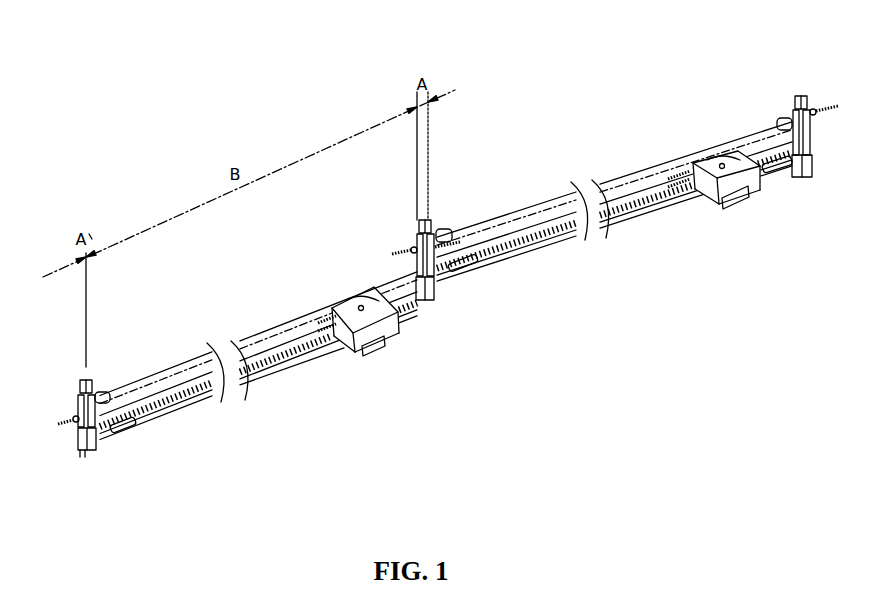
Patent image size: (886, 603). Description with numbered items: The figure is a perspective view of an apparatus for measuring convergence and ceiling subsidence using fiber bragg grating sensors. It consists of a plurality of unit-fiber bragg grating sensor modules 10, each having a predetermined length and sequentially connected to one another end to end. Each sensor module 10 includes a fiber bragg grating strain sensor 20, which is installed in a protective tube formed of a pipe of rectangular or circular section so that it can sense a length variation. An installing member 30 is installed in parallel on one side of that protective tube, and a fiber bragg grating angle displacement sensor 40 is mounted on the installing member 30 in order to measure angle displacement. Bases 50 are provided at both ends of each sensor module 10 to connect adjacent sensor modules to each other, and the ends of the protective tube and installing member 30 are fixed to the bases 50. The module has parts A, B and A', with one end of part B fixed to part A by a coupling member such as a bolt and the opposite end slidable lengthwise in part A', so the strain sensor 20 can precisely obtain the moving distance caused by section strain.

The unit-fiber bragg grating sensor module 10 is at (616, 147).
The fiber bragg grating strain sensor 20 is at (245, 335).
The installing member 30 is at (290, 364).
The fiber bragg grating angle displacement sensor 40 is at (382, 337).
The base 50 is at (76, 387).